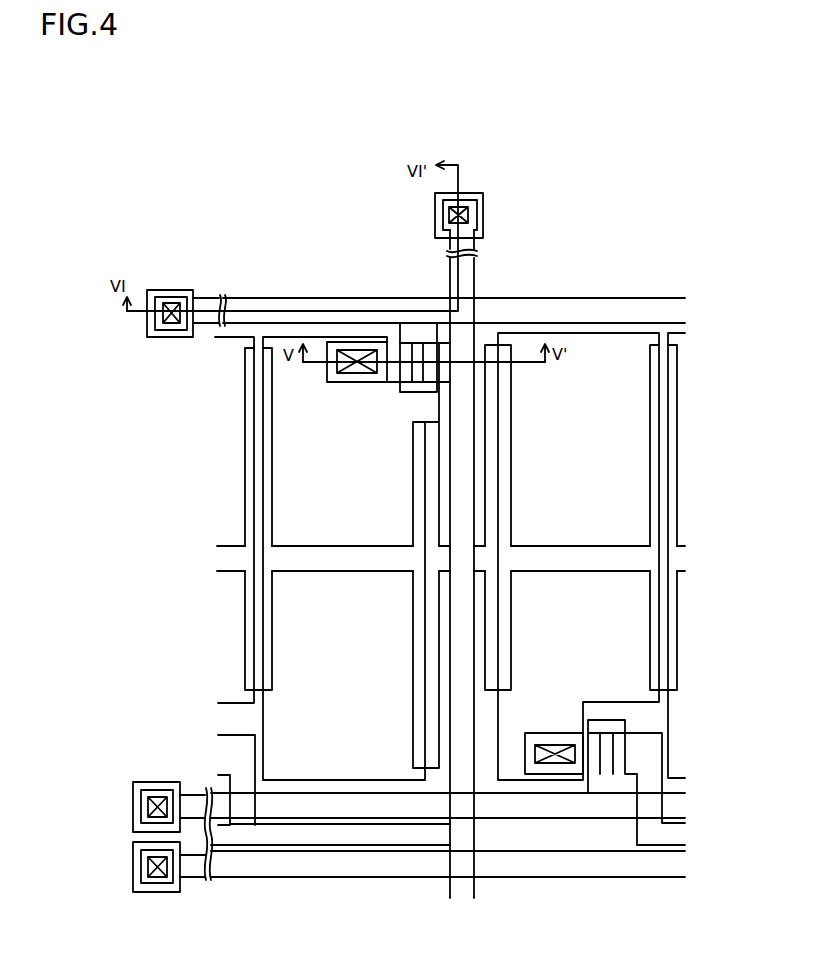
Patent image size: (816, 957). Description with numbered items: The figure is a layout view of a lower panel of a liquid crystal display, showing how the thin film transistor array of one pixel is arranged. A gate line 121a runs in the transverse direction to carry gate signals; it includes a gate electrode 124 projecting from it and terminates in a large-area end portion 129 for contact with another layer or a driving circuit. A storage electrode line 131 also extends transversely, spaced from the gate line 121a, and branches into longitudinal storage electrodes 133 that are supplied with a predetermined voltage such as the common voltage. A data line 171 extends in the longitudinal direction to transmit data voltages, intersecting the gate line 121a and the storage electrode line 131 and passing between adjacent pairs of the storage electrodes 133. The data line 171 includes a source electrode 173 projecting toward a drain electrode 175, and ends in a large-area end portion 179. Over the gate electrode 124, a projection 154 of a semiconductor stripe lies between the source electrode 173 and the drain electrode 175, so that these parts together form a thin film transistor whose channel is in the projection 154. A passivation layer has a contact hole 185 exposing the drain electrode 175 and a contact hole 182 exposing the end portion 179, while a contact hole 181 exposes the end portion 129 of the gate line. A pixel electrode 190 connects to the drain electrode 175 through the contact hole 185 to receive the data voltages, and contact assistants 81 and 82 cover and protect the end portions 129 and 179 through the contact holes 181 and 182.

The gate line 121a is at (296, 298).
The gate electrode 124 is at (400, 392).
The end portion 129 is at (153, 326).
The contact assistant 81 is at (172, 338).
The contact hole 181 is at (170, 303).
The storage electrode line 131 is at (582, 546).
The storage electrode 133 is at (511, 417).
The projection 154 is at (418, 372).
The data line 171 is at (477, 290).
The source electrode 173 is at (420, 404).
The drain electrode 175 is at (336, 383).
The end portion 179 is at (443, 213).
The contact assistant 82 is at (478, 192).
The contact hole 182 is at (477, 214).
The contact hole 185 is at (356, 350).
The pixel electrode 190 is at (583, 333).